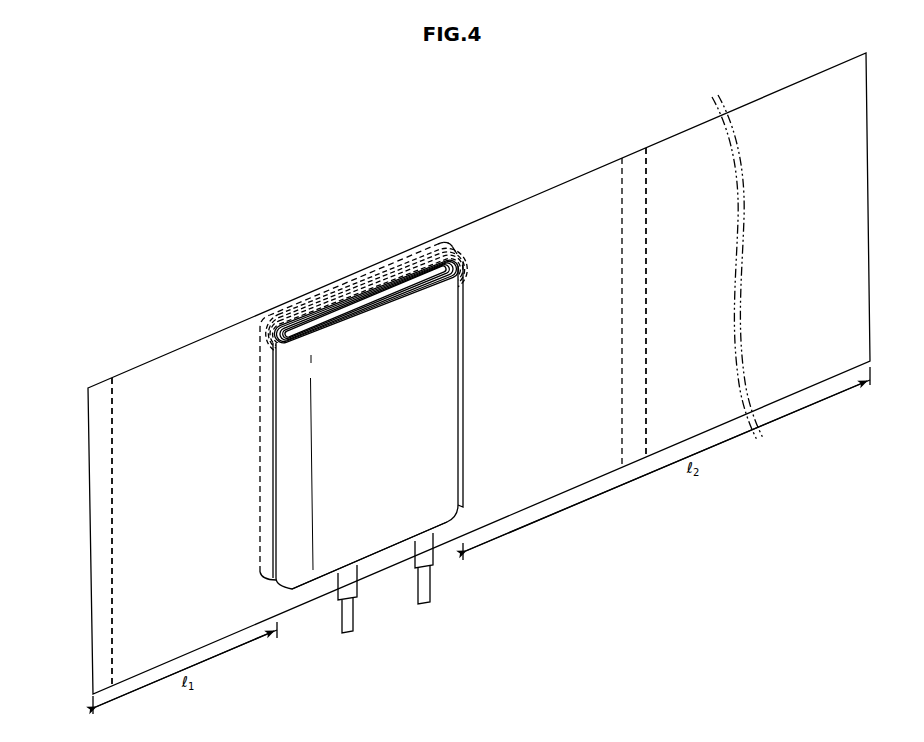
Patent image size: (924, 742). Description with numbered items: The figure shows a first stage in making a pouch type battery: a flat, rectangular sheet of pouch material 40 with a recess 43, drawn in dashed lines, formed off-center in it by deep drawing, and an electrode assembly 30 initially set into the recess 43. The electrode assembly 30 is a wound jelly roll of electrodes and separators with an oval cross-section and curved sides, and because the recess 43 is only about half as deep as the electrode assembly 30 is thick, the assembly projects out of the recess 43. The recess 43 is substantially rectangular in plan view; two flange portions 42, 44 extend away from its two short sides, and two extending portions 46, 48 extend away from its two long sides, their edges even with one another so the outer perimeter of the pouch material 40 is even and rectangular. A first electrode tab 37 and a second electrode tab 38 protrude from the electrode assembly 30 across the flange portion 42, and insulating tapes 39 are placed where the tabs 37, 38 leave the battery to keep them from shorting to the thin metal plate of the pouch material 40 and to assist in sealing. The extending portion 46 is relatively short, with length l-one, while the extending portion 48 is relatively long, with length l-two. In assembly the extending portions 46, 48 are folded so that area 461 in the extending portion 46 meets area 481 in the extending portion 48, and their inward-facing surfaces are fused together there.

The electrode assembly 30 is at (328, 566).
The first electrode tab 37 is at (348, 624).
The second electrode tab 38 is at (429, 591).
The insulating tapes 39 is at (357, 591).
The pouch material 40 is at (546, 175).
The flange portion 42 is at (383, 563).
The recess 43 is at (453, 249).
The flange portion 44 is at (340, 281).
The extending portion 46 is at (127, 497).
The area 461 is at (97, 431).
The extending portion 48 is at (612, 247).
The area 481 is at (637, 178).